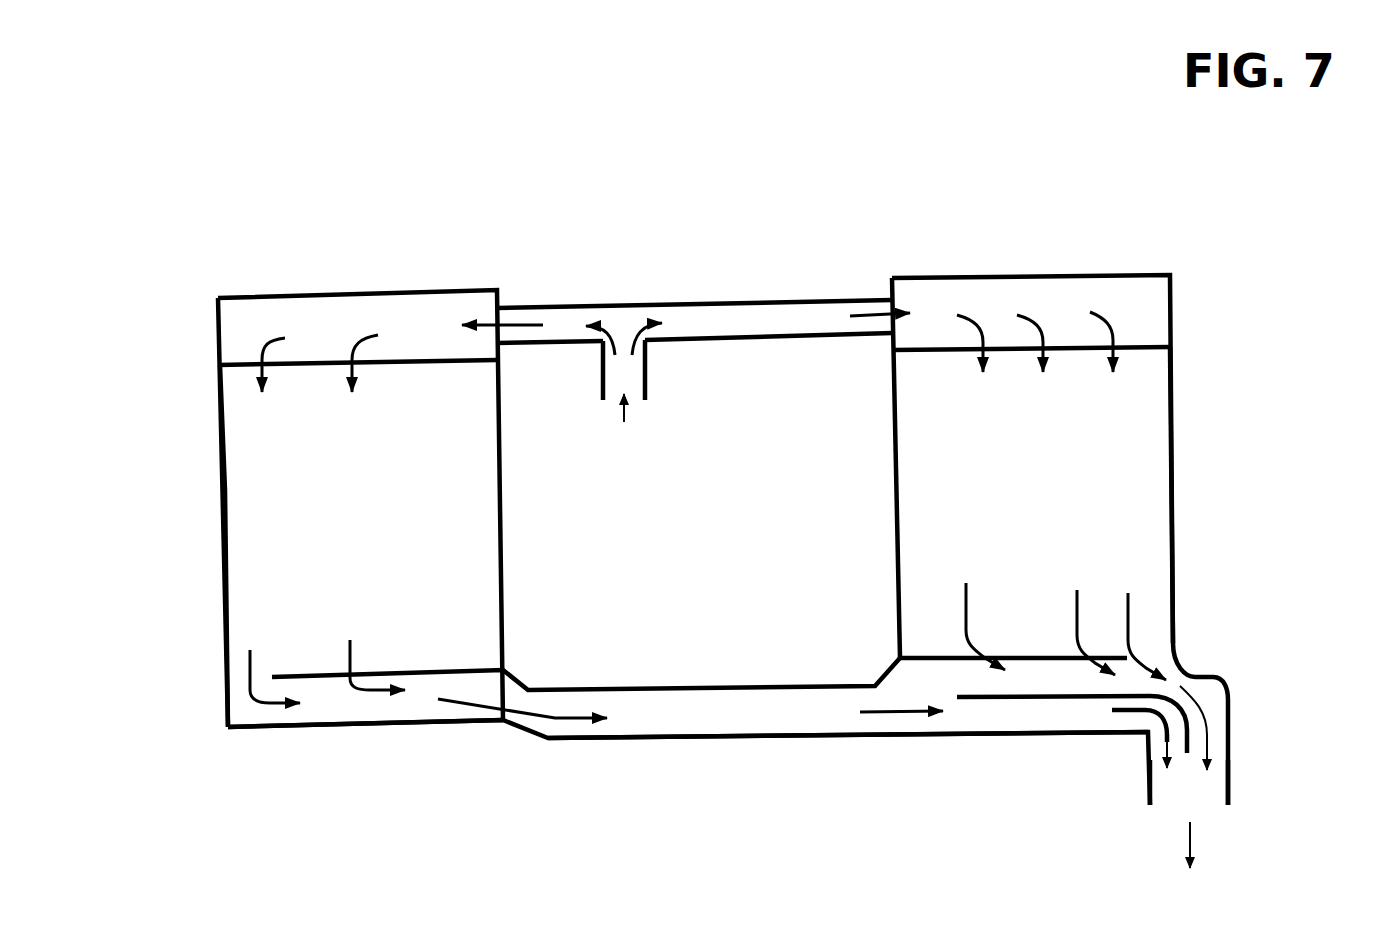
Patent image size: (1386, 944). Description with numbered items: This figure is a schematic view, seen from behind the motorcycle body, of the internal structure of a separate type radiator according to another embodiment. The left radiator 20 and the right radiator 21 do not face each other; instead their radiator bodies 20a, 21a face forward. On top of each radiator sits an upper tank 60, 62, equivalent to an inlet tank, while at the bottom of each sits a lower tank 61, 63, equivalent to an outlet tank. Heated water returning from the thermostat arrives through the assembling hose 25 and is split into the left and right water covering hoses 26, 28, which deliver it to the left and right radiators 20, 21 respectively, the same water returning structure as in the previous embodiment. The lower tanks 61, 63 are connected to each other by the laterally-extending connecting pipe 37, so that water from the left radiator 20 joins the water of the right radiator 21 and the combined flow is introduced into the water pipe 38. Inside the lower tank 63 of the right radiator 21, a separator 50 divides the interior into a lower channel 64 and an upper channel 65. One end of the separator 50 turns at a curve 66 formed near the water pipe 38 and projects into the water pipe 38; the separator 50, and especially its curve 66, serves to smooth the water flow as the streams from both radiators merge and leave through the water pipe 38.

The left radiator 20 is at (357, 290).
The radiator body 20a is at (245, 482).
The right radiator 21 is at (1028, 275).
The radiator body 21a is at (1150, 465).
The assembling hose 25 is at (647, 382).
The left water covering hose 26 is at (548, 305).
The right water covering hose 28 is at (758, 300).
The connecting pipe 37 is at (720, 738).
The water pipe 38 is at (1232, 765).
The separator 50 is at (1035, 693).
The upper tank 60 is at (258, 293).
The lower tank 61 is at (370, 728).
The upper tank 62 is at (1105, 273).
The lower tank 63 is at (995, 733).
The lower channel 64 is at (970, 680).
The upper channel 65 is at (1056, 712).
The curve 66 is at (1177, 707).